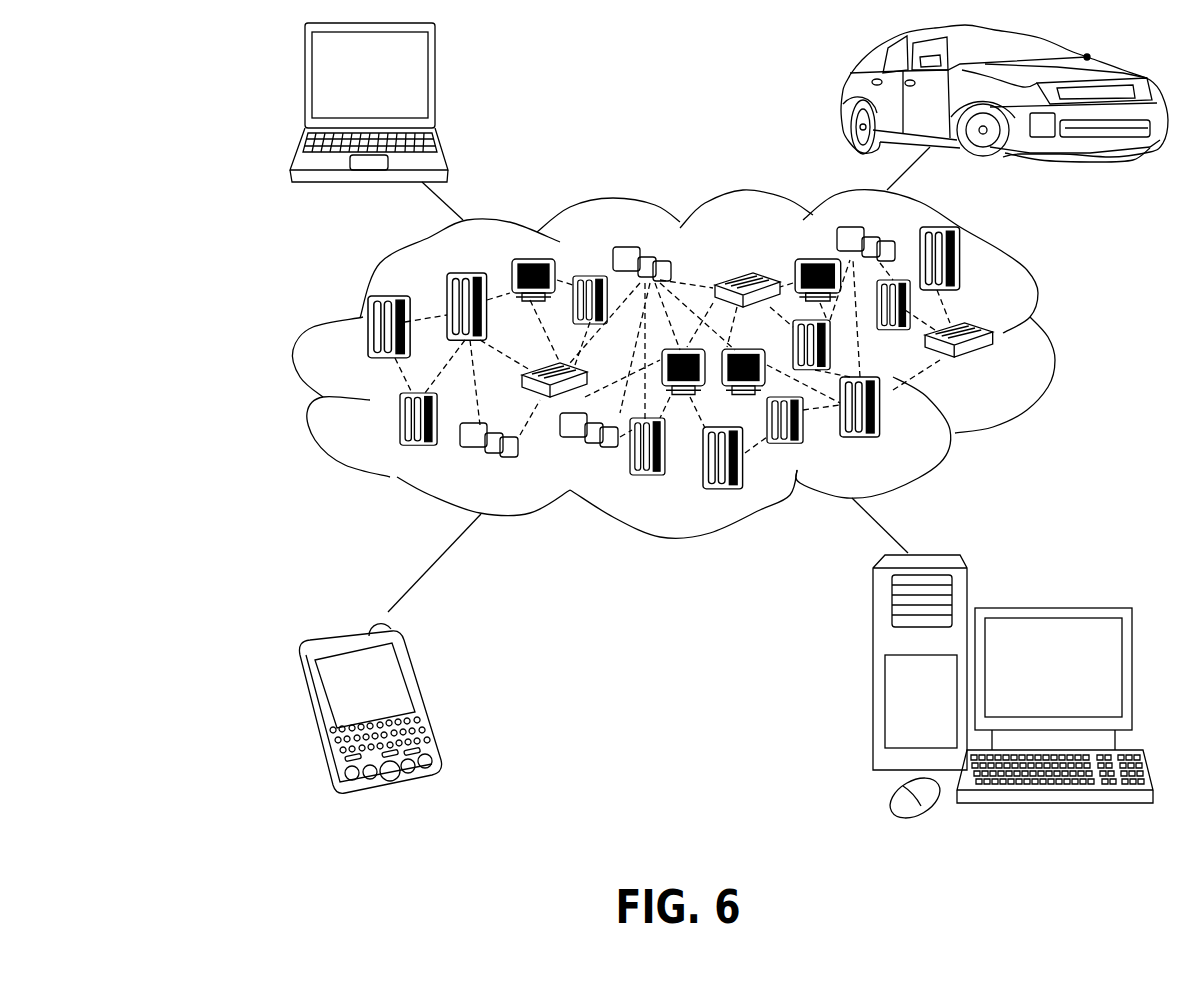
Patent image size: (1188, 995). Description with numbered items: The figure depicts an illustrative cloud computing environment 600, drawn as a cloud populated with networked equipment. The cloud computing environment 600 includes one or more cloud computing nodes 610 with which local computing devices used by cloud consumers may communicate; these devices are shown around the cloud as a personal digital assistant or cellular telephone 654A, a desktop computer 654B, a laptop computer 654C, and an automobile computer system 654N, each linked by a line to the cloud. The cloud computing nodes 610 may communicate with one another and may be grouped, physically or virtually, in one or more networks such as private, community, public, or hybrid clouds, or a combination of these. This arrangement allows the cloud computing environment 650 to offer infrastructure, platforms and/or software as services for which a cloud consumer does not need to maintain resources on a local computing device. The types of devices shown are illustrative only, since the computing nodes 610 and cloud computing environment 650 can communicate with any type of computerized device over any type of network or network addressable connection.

The cloud computing environment 600 is at (146, 48).
The cloud computing environment 650 is at (1052, 338).
The cloud computing nodes 610 is at (1000, 367).
The personal digital assistant (PDA) or cellular telephone 654A is at (424, 698).
The desktop computer 654B is at (1052, 607).
The laptop computer 654C is at (437, 82).
The automobile computer system 654N is at (845, 99).